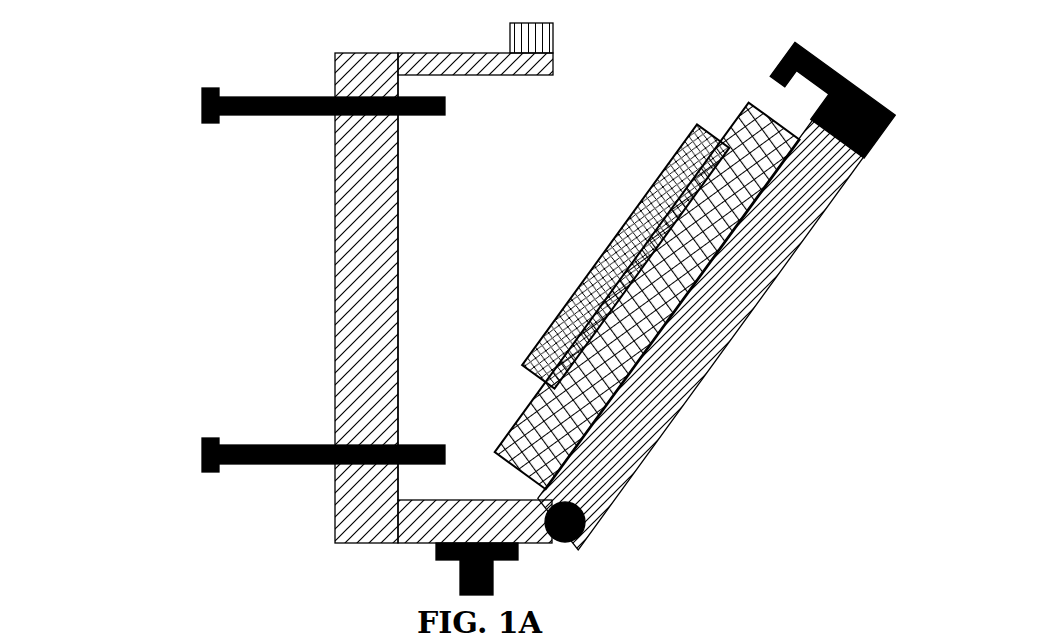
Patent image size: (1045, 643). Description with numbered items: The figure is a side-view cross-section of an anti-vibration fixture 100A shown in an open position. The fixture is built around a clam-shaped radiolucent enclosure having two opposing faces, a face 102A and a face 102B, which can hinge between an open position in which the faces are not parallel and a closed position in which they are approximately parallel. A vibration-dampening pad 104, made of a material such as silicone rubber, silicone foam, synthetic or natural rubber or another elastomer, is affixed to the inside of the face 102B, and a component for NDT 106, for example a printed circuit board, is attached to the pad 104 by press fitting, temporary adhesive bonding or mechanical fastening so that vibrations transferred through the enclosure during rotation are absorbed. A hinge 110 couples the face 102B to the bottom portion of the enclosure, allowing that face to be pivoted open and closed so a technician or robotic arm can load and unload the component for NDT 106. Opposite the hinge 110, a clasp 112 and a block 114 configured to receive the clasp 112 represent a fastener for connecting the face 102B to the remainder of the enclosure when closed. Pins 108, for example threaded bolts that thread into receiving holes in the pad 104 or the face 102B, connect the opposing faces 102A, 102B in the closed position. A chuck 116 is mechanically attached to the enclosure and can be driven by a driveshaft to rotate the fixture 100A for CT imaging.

The anti-vibration fixture 100A is at (158, 63).
The face 102A is at (372, 82).
The face 102B is at (738, 273).
The vibration-dampening pad 104 is at (650, 307).
The component for NDT 106 is at (572, 332).
The pins 108 is at (202, 445).
The hinge 110 is at (583, 518).
The clasp 112 is at (875, 142).
The block 114 is at (523, 43).
The chuck 116 is at (495, 560).